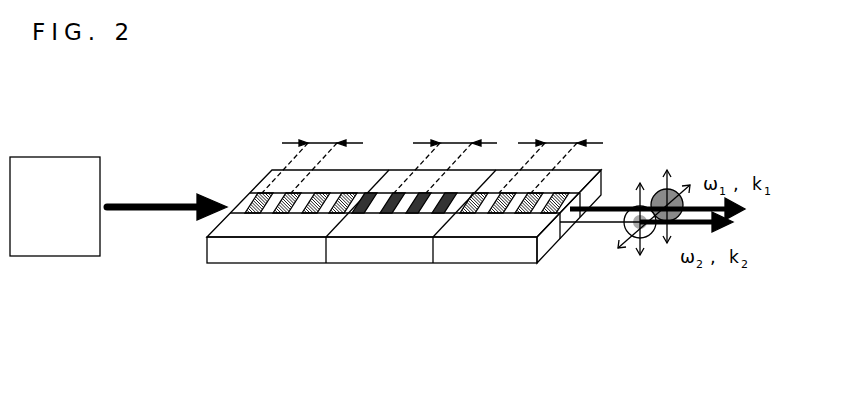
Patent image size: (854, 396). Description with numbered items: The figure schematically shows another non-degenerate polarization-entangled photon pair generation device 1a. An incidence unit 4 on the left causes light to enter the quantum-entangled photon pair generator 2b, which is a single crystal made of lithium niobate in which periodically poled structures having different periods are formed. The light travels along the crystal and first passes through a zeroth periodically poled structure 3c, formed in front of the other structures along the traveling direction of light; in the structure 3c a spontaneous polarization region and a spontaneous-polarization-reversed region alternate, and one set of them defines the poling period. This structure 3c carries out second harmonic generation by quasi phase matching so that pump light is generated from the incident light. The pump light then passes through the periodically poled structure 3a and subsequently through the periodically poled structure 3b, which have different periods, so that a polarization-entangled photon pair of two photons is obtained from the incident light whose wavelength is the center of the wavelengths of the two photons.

The non-degenerate polarization-entangled photon pair generation device 1a is at (247, 103).
The incidence unit 4 is at (55, 157).
The quantum-entangled photon pair generator 2b is at (260, 163).
The zeroth periodically poled structure 3c is at (283, 220).
The periodically poled structure 3a is at (392, 220).
The periodically poled structure 3b is at (502, 218).